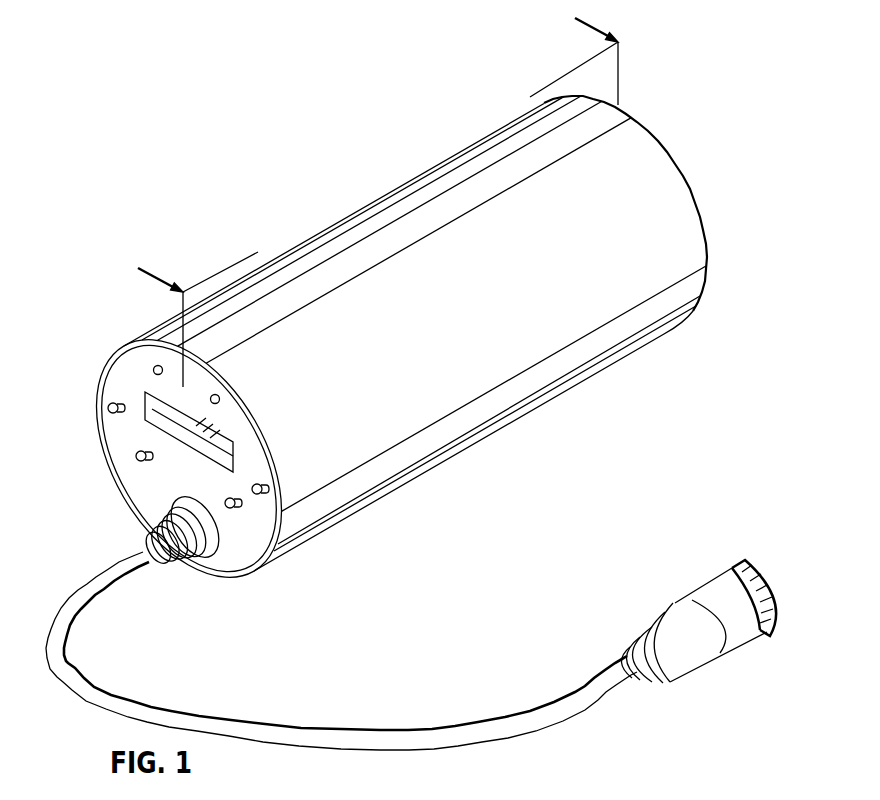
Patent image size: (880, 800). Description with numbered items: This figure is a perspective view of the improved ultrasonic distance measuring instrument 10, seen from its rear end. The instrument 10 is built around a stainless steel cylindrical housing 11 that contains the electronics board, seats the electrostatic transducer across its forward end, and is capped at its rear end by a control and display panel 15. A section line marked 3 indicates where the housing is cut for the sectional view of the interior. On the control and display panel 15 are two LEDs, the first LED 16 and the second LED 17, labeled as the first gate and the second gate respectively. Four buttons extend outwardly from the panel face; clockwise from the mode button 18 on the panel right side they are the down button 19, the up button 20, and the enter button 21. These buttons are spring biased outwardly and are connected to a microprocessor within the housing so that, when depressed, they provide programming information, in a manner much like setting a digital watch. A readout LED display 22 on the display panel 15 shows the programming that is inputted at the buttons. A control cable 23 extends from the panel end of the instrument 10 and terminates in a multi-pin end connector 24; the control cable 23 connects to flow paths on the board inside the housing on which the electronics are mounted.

The section line 3- 3 is at (365, 193).
The ultrasonic distance measuring instrument 10 is at (382, 352).
The cylindrical housing 11 is at (454, 343).
The control and display panel 15 is at (227, 555).
The LED 16 is at (218, 396).
The LED 17 is at (153, 367).
The mode button 18 is at (264, 494).
The down button 19 is at (234, 512).
The up button 20 is at (135, 458).
The enter button 21 is at (108, 408).
The readout LED display 22 is at (217, 446).
The control cable 23 is at (123, 565).
The multi-pin end connector 24 is at (672, 622).